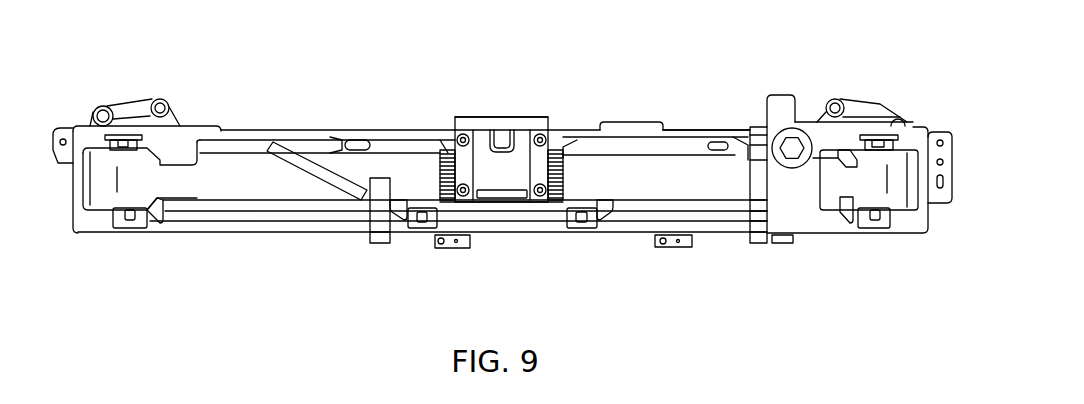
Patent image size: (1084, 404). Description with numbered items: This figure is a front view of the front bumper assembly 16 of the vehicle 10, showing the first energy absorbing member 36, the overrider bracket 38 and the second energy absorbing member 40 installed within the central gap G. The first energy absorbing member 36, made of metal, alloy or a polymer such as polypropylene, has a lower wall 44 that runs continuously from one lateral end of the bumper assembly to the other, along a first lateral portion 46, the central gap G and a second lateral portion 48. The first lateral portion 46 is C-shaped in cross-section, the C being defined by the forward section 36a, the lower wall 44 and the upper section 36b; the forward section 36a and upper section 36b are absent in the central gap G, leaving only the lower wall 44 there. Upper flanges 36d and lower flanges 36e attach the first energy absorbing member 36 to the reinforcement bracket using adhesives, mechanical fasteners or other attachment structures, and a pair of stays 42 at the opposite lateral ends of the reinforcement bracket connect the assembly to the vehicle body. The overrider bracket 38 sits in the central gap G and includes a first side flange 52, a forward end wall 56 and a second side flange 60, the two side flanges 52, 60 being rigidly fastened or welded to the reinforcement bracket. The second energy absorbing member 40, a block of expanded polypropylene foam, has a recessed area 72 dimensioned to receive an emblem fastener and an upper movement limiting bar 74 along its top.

The vehicle 10 is at (502, 107).
The front bumper assembly 16 is at (740, 35).
The first energy absorbing member 36 is at (220, 182).
The forward section 36a is at (685, 168).
The upper section 36b is at (621, 140).
The upper flanges 36d is at (395, 148).
The lower flanges 36e is at (290, 228).
The overrider bracket 38 is at (491, 163).
The second energy absorbing member 40 is at (465, 110).
The stays 42 is at (128, 112).
The lower wall 44 is at (635, 218).
The first lateral portion 46 is at (259, 170).
The second lateral portion 48 is at (715, 170).
The first side flange 52 is at (440, 162).
The forward end wall 56 is at (510, 173).
The second side flange 60 is at (542, 170).
The recessed area 72 is at (503, 143).
The upper movement limiting bar 74 is at (538, 123).
The central gap G is at (453, 183).